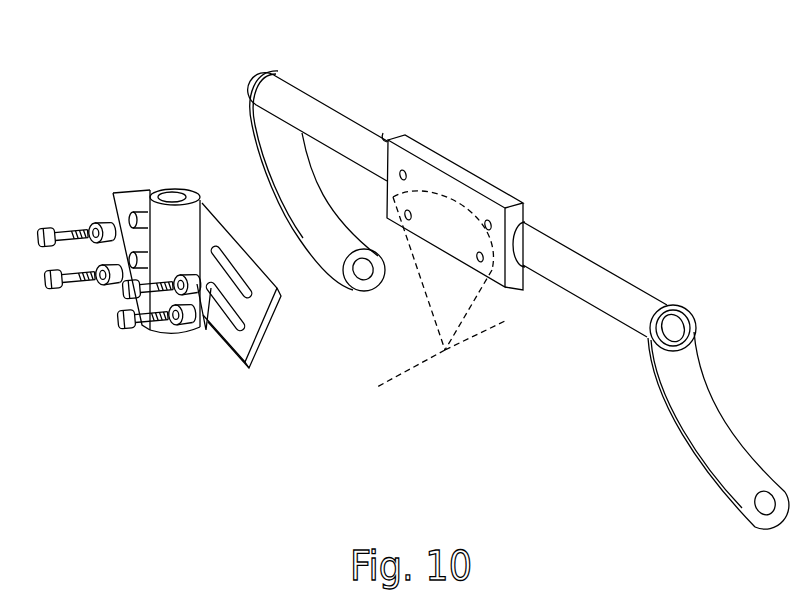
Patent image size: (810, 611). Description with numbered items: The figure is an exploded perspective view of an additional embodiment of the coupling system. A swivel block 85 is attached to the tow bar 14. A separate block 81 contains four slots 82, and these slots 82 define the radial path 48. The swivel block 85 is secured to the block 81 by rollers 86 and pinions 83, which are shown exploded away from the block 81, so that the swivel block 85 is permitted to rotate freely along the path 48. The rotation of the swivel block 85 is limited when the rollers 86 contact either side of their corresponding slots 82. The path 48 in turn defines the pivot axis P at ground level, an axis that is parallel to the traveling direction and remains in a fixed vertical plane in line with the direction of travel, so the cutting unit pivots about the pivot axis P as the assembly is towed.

The tow bar 14 is at (628, 312).
The radial path 48 is at (411, 195).
The swivel block 85 is at (457, 171).
The block 81 is at (140, 193).
The slots 82 is at (237, 320).
The pinions 83 is at (122, 323).
The rollers 86 is at (211, 288).
The pivot axis P is at (447, 352).